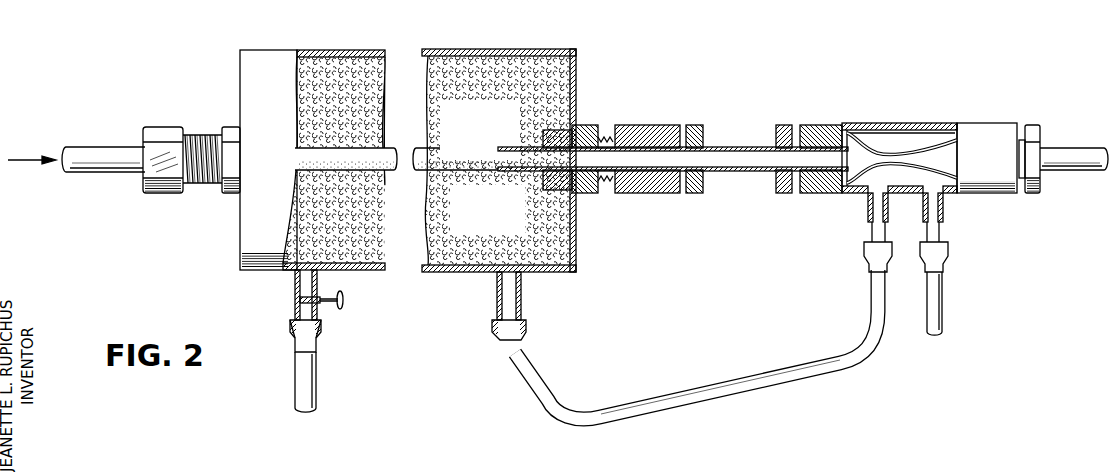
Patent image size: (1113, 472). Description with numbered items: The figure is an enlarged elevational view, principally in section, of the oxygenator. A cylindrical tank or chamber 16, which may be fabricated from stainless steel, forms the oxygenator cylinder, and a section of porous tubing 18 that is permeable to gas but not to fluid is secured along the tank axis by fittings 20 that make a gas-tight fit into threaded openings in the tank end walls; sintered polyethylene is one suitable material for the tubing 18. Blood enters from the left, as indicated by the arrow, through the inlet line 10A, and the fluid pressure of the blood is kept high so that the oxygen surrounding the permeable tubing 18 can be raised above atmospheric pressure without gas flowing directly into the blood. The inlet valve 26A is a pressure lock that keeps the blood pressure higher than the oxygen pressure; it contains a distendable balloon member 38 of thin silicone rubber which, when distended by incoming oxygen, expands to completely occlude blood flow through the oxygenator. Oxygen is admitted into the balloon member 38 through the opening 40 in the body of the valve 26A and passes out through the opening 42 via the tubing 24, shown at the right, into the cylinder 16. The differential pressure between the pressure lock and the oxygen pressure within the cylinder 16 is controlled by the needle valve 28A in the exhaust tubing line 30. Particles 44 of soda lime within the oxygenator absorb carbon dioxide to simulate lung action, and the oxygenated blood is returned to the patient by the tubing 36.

The inlet tube 10A is at (95, 157).
The fittings 20 is at (232, 128).
The particles of soda lime 44 is at (345, 50).
The cylindrical tank 16 is at (480, 50).
The porous tubing 18 is at (414, 163).
The distendable balloon member 38 is at (880, 152).
The inlet valve 26A is at (930, 124).
The tubing 36 is at (1068, 151).
The opening 42 is at (868, 233).
The opening 40 is at (943, 232).
The tubing 24 is at (935, 316).
The needle valve 28A is at (343, 300).
The exhaust tubing line 30 is at (305, 378).